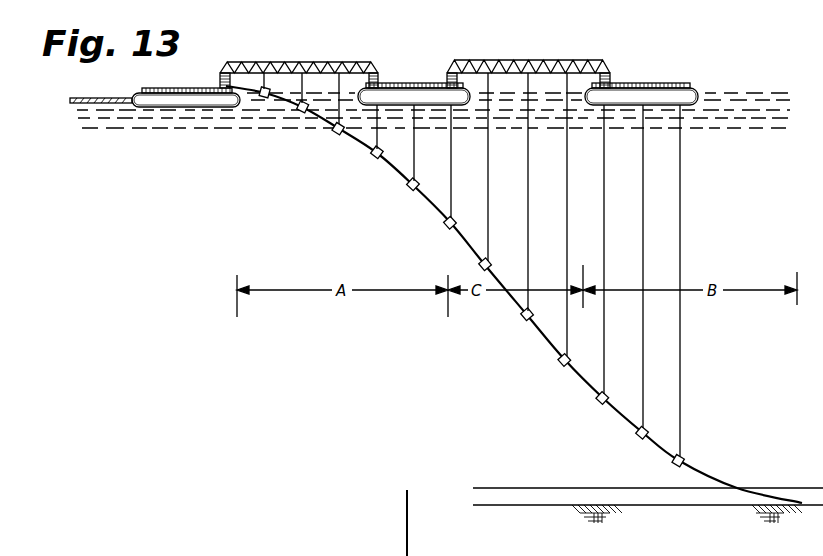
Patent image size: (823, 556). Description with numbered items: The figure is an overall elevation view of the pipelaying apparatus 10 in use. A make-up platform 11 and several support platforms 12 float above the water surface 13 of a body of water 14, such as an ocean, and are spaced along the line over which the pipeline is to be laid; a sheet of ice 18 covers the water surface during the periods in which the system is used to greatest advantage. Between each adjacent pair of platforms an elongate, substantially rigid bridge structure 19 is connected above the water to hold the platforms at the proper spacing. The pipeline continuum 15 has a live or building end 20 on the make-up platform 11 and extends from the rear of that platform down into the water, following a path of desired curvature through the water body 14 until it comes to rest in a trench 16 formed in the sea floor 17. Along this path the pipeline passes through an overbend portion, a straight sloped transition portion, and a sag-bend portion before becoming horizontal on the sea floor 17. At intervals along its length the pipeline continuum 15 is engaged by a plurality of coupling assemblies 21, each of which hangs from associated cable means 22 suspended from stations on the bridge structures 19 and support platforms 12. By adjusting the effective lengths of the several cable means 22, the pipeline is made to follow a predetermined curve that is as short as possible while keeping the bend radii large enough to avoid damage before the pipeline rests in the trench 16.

The pipelaying apparatus 10 is at (421, 48).
The make-up platform 11 is at (168, 82).
The support platform 12 is at (432, 70).
The water surface 13 is at (537, 97).
The body of water 14 is at (742, 158).
The pipeline continuum 15 is at (551, 347).
The trench 16 is at (733, 493).
The sea floor 17 is at (622, 508).
The sheet of ice 18 is at (90, 100).
The bridge structure 19 is at (276, 57).
The building end 20 is at (197, 86).
The coupling assembly 21 is at (427, 221).
The cable means 22 is at (568, 180).